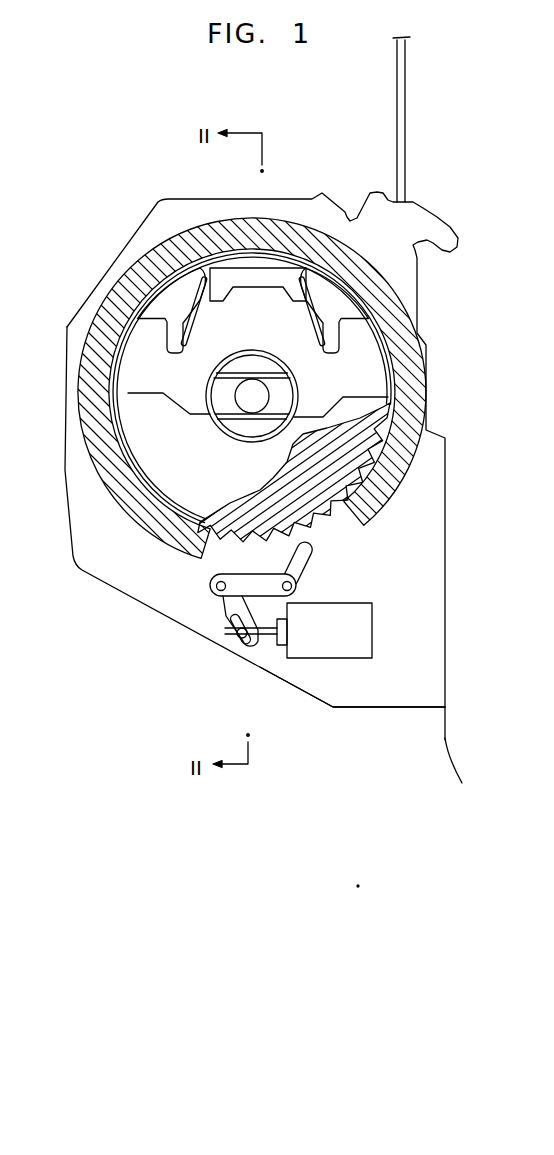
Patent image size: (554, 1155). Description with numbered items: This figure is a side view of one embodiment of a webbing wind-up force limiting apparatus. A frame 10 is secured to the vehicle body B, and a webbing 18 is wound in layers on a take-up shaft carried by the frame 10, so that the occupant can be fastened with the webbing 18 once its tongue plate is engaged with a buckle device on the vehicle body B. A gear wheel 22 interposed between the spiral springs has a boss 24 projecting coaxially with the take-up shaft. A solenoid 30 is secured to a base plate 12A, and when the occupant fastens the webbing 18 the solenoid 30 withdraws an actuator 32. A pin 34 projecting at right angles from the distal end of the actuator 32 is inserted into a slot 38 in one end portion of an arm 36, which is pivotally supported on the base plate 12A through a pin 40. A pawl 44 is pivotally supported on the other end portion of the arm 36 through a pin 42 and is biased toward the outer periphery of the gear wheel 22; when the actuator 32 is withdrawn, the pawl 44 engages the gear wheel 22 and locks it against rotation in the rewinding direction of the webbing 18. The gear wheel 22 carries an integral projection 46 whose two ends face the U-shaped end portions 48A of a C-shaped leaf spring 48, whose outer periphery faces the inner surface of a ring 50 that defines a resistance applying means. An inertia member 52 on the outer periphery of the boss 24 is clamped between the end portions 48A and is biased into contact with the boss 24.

The frame 10 is at (445, 466).
The base plate 12A is at (341, 706).
The vehicle body B is at (452, 752).
The webbing 18 is at (410, 118).
The gear wheel 22 is at (333, 518).
The boss 24 is at (222, 412).
The solenoid 30 is at (372, 630).
The actuator 32 is at (271, 638).
The pin 34 is at (238, 637).
The arm 36 is at (217, 605).
The slot 38 is at (244, 648).
The pin 40 is at (210, 582).
The pin 42 is at (293, 586).
The pawl 44 is at (307, 562).
The projection 46 is at (289, 266).
The leaf spring 48 is at (363, 300).
The end portions 48A is at (220, 317).
The ring 50 is at (420, 385).
The inertia member 52 is at (164, 383).